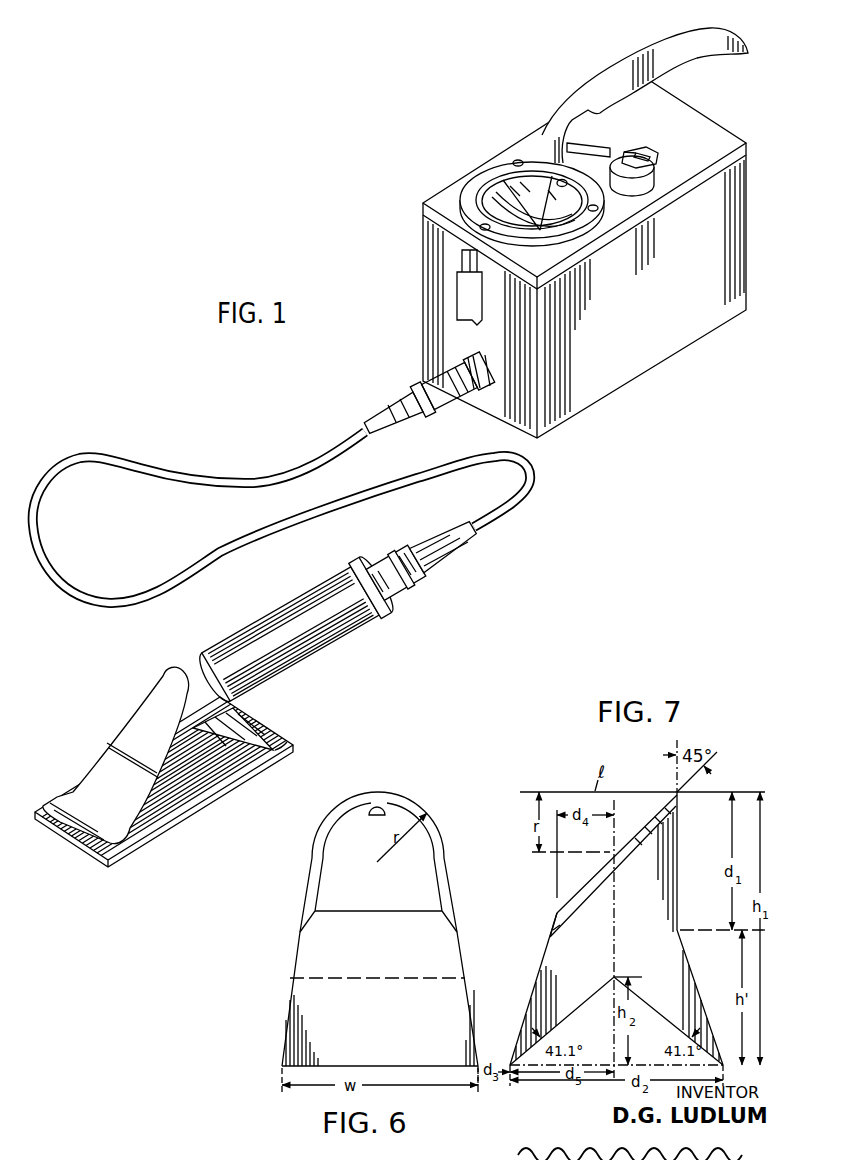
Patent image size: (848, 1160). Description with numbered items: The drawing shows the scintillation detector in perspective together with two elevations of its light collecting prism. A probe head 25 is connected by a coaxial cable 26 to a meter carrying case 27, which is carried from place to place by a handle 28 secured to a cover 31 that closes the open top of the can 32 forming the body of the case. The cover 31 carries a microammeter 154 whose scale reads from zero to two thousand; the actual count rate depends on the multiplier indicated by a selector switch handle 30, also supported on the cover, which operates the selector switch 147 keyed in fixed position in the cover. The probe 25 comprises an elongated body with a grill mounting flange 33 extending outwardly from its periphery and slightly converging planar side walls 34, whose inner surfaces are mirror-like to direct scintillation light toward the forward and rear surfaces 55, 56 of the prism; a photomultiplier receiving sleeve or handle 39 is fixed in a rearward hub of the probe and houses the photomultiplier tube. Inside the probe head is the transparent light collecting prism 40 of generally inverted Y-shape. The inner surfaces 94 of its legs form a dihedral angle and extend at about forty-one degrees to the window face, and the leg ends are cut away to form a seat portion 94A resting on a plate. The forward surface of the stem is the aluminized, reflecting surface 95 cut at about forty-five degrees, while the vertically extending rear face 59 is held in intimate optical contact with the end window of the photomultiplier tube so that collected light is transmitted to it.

In FIG. 1, the probe head 25 is at (108, 722).
In FIG. 1, the coaxial cable 26 is at (168, 480).
In FIG. 1, the meter carrying case 27 is at (584, 253).
In FIG. 1, the handle 28 is at (613, 76).
In FIG. 1, the selector switch handle 30 is at (639, 163).
In FIG. 1, the cover 31 is at (707, 128).
In FIG. 1, the can 32 is at (700, 318).
In FIG. 1, the grill mounting flange 33 is at (268, 743).
In FIG. 1, the side walls 34 is at (177, 793).
In FIG. 1, the photomultiplier receiving sleeve or handle 39 is at (267, 620).
In FIG. 6, the light collecting prism 40 is at (378, 956).
In FIG. 7, the light collecting prism 40 is at (633, 909).
In FIG. 6, the forward surface of the prism 55 is at (297, 1025).
In FIG. 7, the forward surface of the prism 55 is at (544, 950).
In FIG. 7, the rear surface of the prism 56 is at (689, 945).
In FIG. 7, the vertically extending rear face of the prism 59 is at (680, 860).
In FIG. 7, the inner surfaces of the prism legs 94 is at (573, 1017).
In FIG. 6, the seat portion 94A is at (397, 1093).
In FIG. 7, the 45° surface 95 is at (598, 872).
In FIG. 1, the selector switch 147 is at (660, 135).
In FIG. 1, the microammeter 154 is at (507, 182).